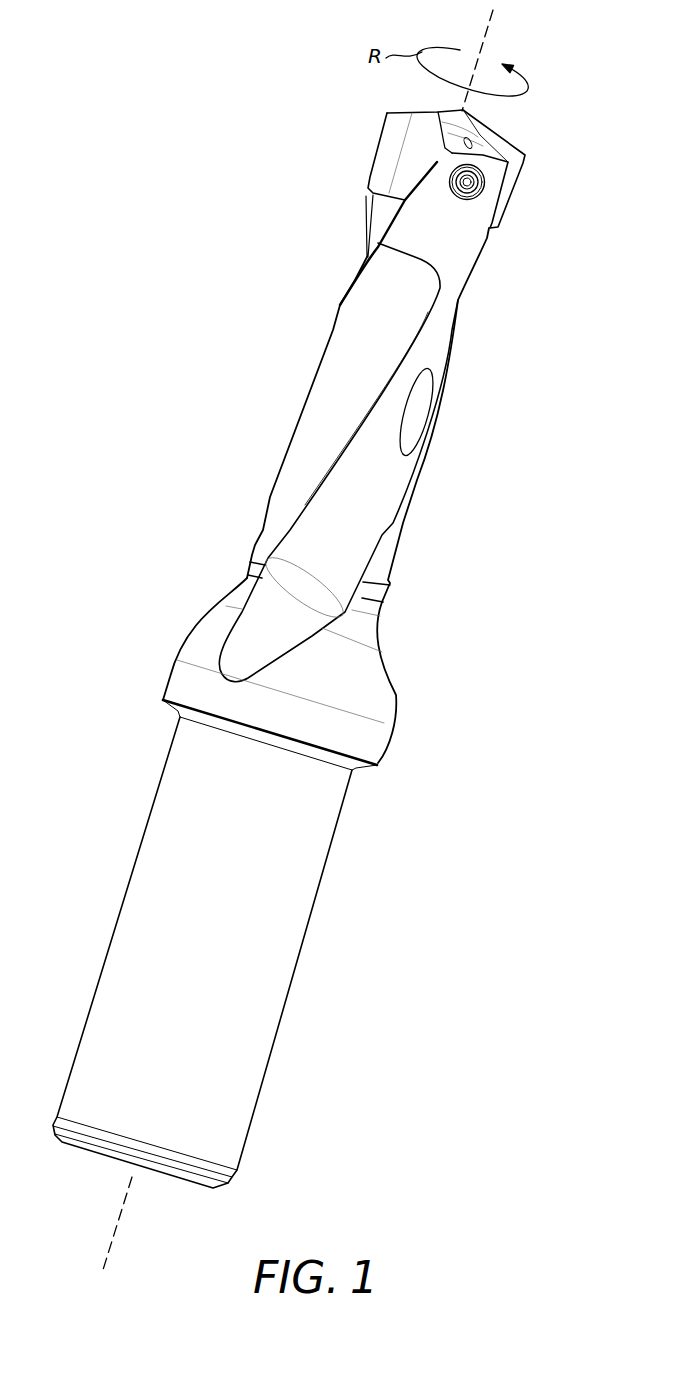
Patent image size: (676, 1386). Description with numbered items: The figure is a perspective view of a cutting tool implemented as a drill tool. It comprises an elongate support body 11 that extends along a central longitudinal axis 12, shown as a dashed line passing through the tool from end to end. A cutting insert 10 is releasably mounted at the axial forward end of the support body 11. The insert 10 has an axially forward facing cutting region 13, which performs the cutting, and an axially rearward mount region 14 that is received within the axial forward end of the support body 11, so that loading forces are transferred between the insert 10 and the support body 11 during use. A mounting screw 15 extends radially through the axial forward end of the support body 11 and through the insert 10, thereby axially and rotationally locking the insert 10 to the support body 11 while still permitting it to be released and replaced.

The cutting insert 10 is at (309, 643).
The elongate support body 11 is at (415, 493).
The central longitudinal axis 12 is at (488, 40).
The cutting region 13 is at (507, 138).
The mount region 14 is at (367, 198).
The mounting screw 15 is at (485, 181).